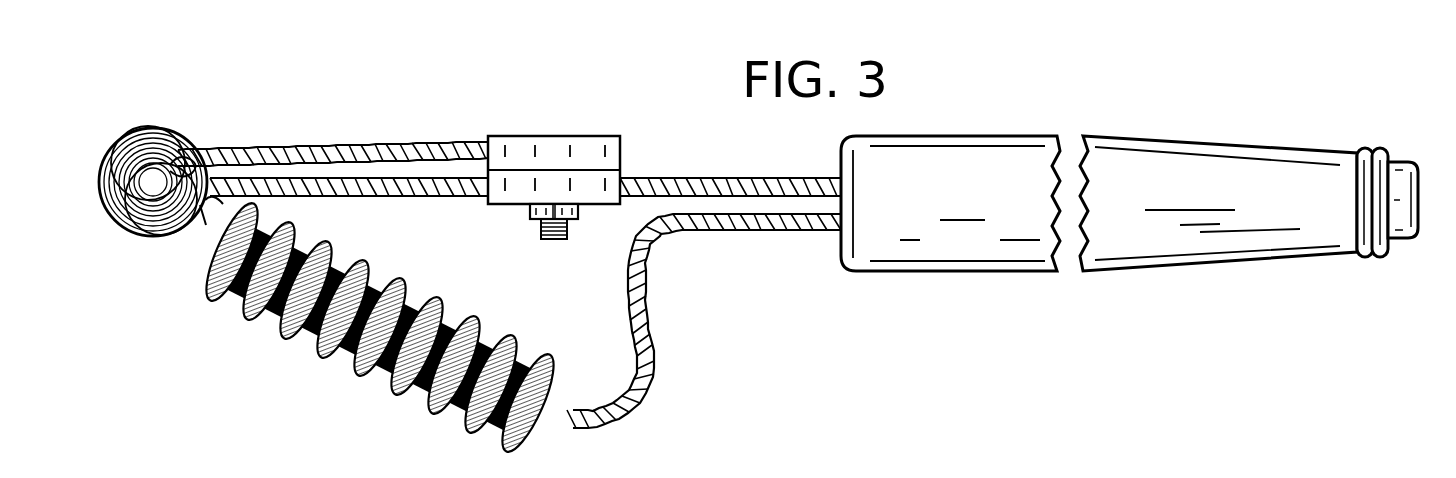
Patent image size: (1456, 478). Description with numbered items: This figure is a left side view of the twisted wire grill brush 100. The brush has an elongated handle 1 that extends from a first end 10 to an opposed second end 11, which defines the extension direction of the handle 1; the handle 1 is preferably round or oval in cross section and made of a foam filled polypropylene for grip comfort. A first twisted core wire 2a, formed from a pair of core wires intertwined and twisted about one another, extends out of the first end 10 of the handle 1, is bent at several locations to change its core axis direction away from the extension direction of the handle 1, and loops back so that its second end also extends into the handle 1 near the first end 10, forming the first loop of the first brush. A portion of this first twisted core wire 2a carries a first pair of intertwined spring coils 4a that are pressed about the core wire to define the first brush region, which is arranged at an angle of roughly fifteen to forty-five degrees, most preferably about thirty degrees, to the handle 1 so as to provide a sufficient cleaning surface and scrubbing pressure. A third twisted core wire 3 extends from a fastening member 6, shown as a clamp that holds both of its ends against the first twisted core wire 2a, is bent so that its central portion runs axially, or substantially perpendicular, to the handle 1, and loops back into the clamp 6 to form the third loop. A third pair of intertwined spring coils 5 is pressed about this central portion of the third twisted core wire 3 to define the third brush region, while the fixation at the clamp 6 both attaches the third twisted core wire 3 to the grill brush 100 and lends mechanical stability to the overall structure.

The twisted wire grill brush 100 is at (1211, 108).
The handle 1 is at (973, 134).
The first end of the handle 10 is at (840, 255).
The second end of the handle 11 is at (1418, 200).
The first twisted core wire 2a is at (663, 174).
The third twisted core wire 3 is at (341, 141).
The first pair of spring coils 4a is at (335, 360).
The third pair of spring coils 5 is at (123, 132).
The fastening member 6 is at (535, 136).